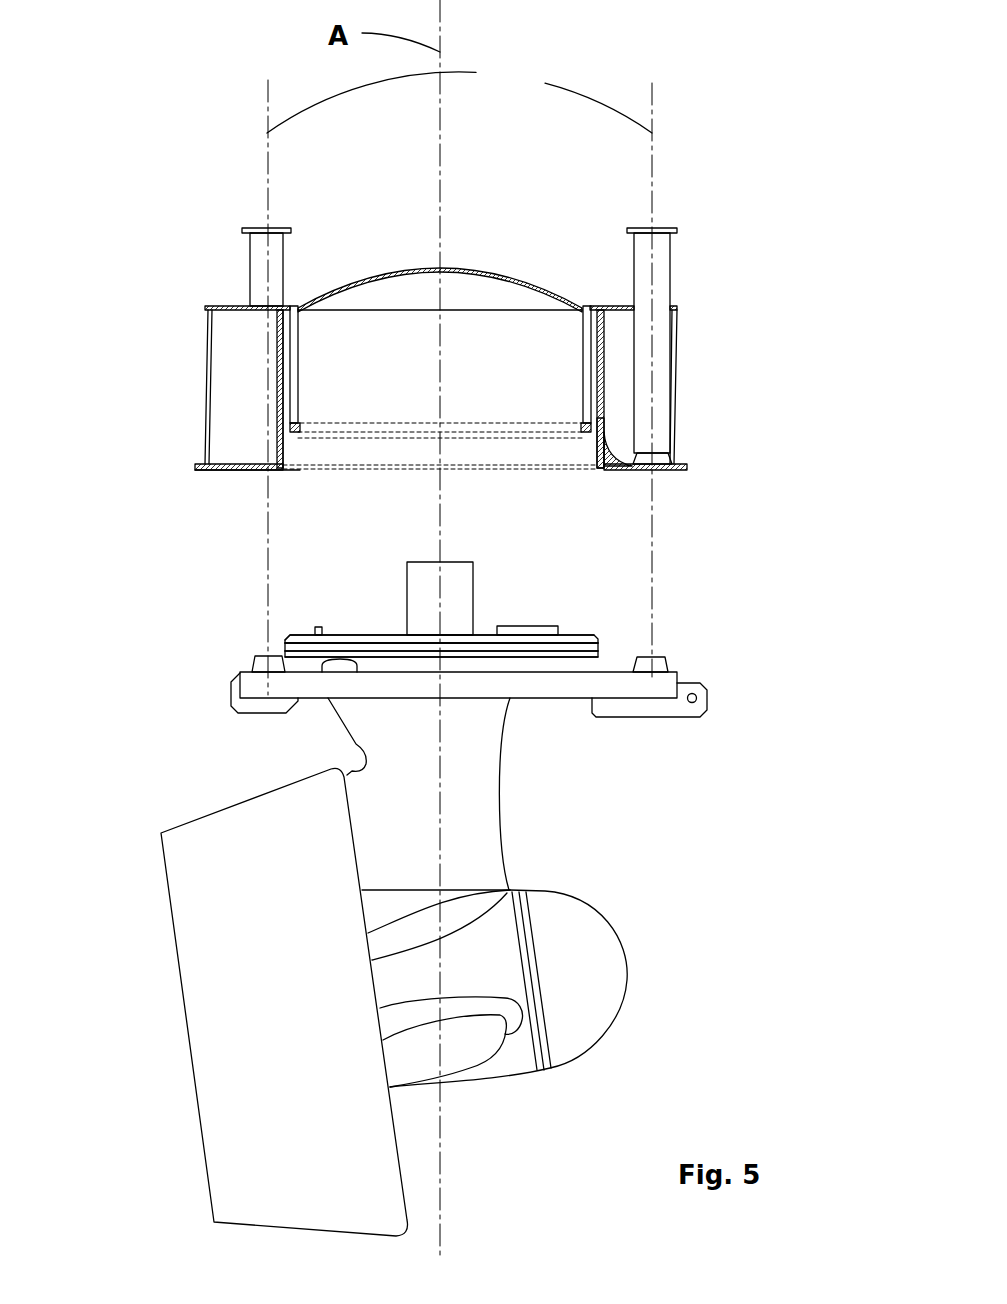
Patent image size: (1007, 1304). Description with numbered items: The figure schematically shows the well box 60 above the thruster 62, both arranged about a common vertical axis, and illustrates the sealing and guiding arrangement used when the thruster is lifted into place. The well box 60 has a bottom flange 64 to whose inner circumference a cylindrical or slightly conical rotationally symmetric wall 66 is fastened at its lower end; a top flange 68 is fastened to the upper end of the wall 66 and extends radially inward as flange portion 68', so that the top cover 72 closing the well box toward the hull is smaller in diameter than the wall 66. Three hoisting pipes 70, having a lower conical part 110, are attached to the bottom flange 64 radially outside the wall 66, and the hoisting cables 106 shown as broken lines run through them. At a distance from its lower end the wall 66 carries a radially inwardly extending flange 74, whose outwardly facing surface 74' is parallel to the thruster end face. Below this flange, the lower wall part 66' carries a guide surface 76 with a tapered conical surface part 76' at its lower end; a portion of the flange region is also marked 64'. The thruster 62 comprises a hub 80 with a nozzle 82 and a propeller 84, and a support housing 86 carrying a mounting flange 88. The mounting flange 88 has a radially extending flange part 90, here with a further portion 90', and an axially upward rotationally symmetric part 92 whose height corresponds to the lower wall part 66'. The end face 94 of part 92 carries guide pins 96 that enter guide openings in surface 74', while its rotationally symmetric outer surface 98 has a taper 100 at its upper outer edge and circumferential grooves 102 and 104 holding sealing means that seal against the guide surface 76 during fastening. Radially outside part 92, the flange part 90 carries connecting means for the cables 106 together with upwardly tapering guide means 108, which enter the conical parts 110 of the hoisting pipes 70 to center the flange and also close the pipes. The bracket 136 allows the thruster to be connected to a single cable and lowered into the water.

The well box 60 is at (242, 210).
The thruster 62 is at (212, 781).
The bottom flange 64 is at (185, 496).
The flange portion 64' is at (194, 518).
The rotationally symmetric wall 66 is at (454, 324).
The lower wall part 66' is at (187, 389).
The top flange 68 is at (382, 361).
The radially inwardly extending flange portion 68' is at (440, 308).
The hoisting pipes 70 is at (262, 270).
The top cover 72 is at (470, 268).
The radially inwardly extending flange 74 is at (677, 403).
The surface of the inwardly extending flange 74' is at (694, 425).
The guide surface 76 is at (324, 475).
The tapered conical surface part 76' is at (562, 475).
The hub 80 is at (637, 935).
The nozzle 82 is at (275, 1017).
The propeller 84 is at (397, 1057).
The support housing 86 is at (425, 812).
The mounting flange 88 is at (720, 574).
The radially extending flange part 90 is at (485, 698).
The frame bracket 90' is at (241, 695).
The rotationally symmetric part 92 is at (612, 634).
The end face 94 is at (290, 634).
The guide pins 96 is at (316, 627).
The rotationally symmetric outer surface 98 is at (287, 650).
The taper 100 is at (598, 633).
The groove 102 is at (458, 647).
The groove 104 is at (457, 658).
The hoisting cables 106 is at (459, 95).
The upwardly tapering guide means 108 is at (265, 663).
The lower conical part 110 is at (677, 463).
The bracket 136 is at (670, 706).